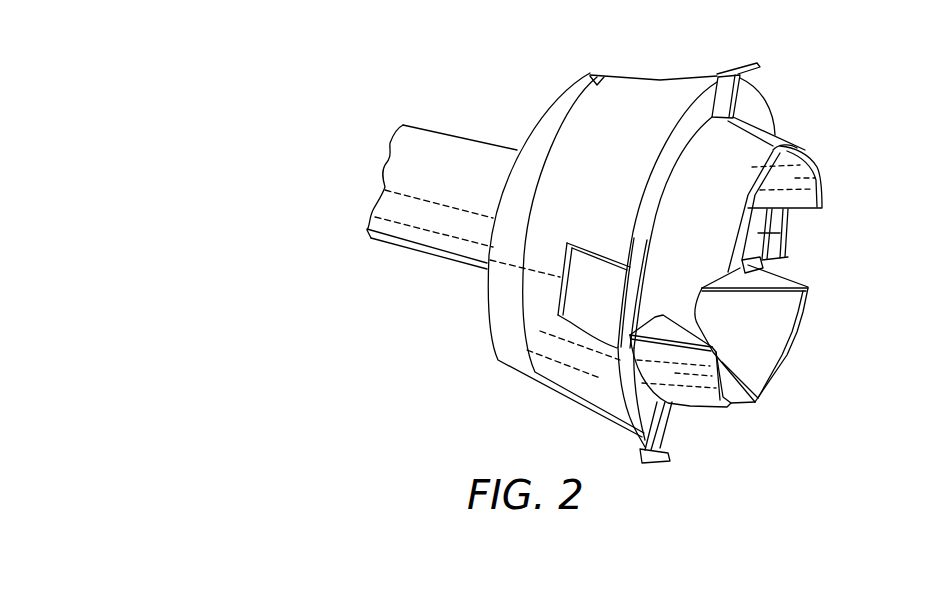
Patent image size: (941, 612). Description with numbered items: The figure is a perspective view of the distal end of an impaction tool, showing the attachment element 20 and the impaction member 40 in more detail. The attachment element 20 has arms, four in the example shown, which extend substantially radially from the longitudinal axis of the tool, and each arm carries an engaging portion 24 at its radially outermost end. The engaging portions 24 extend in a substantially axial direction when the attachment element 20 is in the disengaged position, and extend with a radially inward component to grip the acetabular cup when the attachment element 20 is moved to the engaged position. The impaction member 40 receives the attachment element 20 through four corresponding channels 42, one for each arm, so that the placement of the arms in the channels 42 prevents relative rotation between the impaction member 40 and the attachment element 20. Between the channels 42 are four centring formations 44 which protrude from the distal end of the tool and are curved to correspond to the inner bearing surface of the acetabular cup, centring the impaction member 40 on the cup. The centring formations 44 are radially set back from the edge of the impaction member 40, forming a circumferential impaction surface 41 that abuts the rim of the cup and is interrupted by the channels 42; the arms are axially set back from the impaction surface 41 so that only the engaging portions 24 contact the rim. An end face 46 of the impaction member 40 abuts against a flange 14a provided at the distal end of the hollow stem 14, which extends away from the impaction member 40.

The stem 14 is at (438, 135).
The flange 14a is at (545, 110).
The attachment element 20 is at (737, 105).
The engaging portion 24 is at (758, 66).
The impaction member 40 is at (633, 90).
The impaction surface 41 is at (673, 152).
The channel 42 is at (586, 258).
The centring formation 44 is at (745, 163).
The end face 46 is at (594, 76).